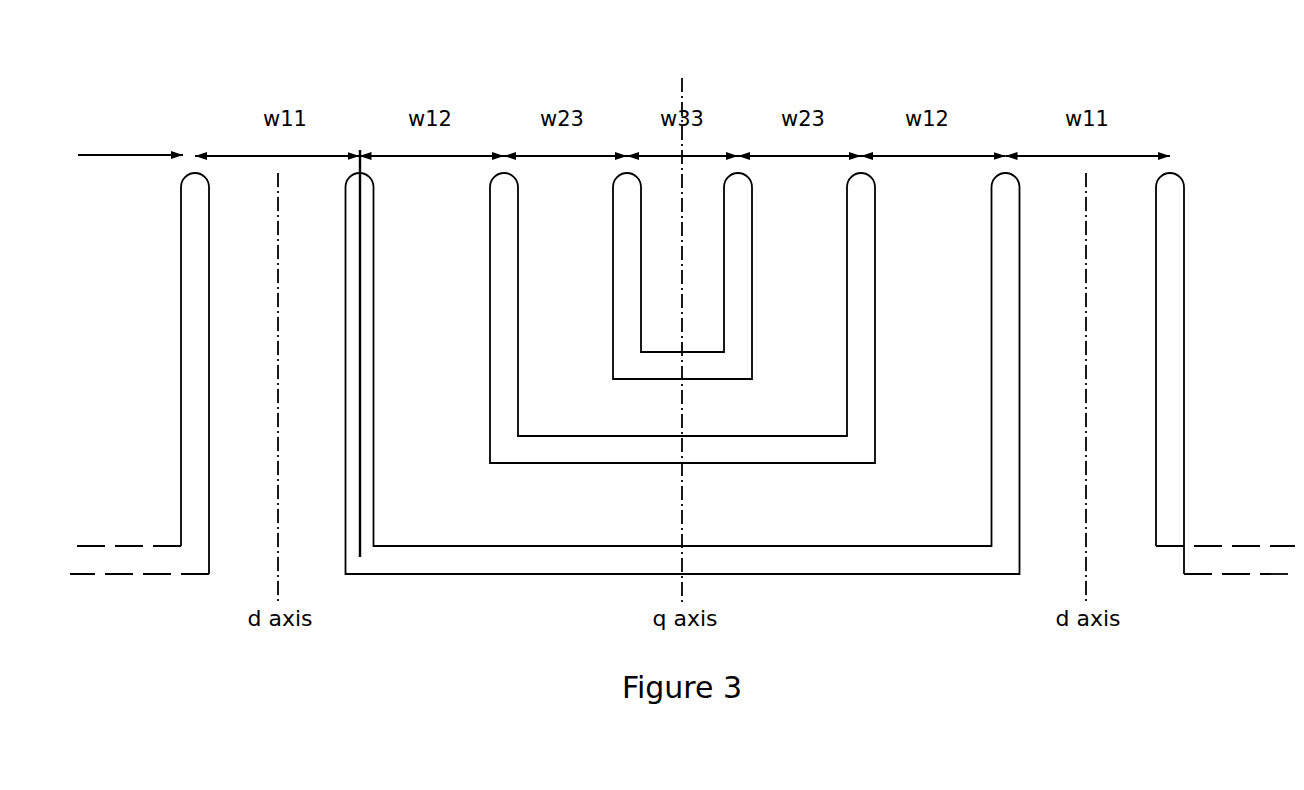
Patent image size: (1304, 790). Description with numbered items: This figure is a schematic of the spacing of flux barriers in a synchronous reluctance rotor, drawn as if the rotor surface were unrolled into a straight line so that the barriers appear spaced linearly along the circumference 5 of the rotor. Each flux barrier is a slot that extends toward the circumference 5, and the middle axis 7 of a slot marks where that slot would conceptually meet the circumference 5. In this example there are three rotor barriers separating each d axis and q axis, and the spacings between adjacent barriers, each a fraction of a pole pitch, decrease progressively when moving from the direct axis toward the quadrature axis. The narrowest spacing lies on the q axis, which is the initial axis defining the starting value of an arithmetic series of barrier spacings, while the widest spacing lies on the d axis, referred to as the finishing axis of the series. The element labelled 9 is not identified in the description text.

The circumference 5 is at (110, 154).
The middle axis 7 is at (361, 152).
The slot center line conductor 9 is at (360, 150).